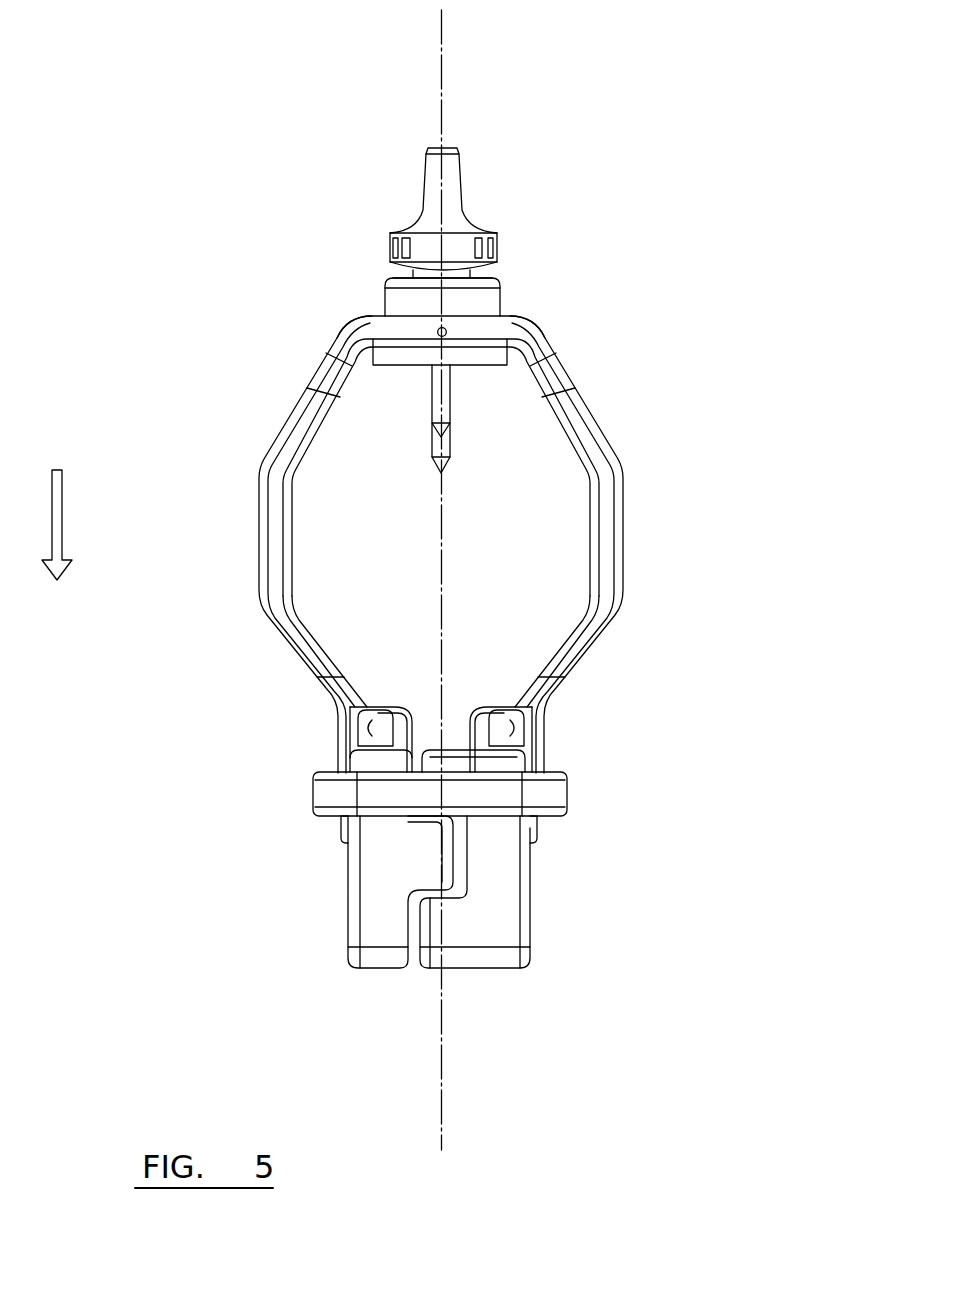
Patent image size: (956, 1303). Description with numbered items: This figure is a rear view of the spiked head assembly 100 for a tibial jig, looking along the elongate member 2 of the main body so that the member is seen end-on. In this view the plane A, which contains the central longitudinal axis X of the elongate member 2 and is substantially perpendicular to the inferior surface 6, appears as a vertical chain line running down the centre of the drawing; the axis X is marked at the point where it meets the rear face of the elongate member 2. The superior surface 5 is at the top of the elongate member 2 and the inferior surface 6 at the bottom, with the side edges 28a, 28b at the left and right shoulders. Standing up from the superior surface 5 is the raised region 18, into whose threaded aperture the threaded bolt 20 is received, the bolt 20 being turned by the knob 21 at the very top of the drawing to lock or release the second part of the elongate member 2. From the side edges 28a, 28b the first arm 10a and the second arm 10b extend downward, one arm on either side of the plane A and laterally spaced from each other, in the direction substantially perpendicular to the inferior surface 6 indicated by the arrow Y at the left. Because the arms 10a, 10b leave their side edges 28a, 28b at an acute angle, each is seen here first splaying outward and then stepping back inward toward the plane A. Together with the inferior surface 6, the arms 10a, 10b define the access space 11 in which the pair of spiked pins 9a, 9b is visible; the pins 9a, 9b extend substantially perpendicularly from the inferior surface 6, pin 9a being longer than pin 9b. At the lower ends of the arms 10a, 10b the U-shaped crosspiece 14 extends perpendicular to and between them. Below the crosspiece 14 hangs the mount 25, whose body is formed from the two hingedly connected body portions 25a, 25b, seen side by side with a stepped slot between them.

The spiked head assembly 100 is at (669, 357).
The elongate member 2 is at (514, 302).
The superior surface 5 is at (383, 310).
The inferior surface 6 is at (550, 360).
The spiked pin 9a is at (440, 448).
The spiked pin 9b is at (431, 410).
The first arm 10a is at (275, 583).
The second arm 10b is at (608, 542).
The access space 11 is at (510, 464).
The U-shaped crosspiece 14 is at (548, 797).
The raised region 18 is at (500, 282).
The threaded bolt 20 is at (440, 265).
The knob 21 is at (462, 190).
The mount 25 is at (538, 896).
The body portion 25a is at (380, 908).
The body portion 25b is at (465, 930).
The side edge 28a is at (337, 326).
The side edge 28b is at (533, 315).
The plane A is at (447, 68).
The central longitudinal axis X is at (439, 337).
The arrow Y is at (57, 543).